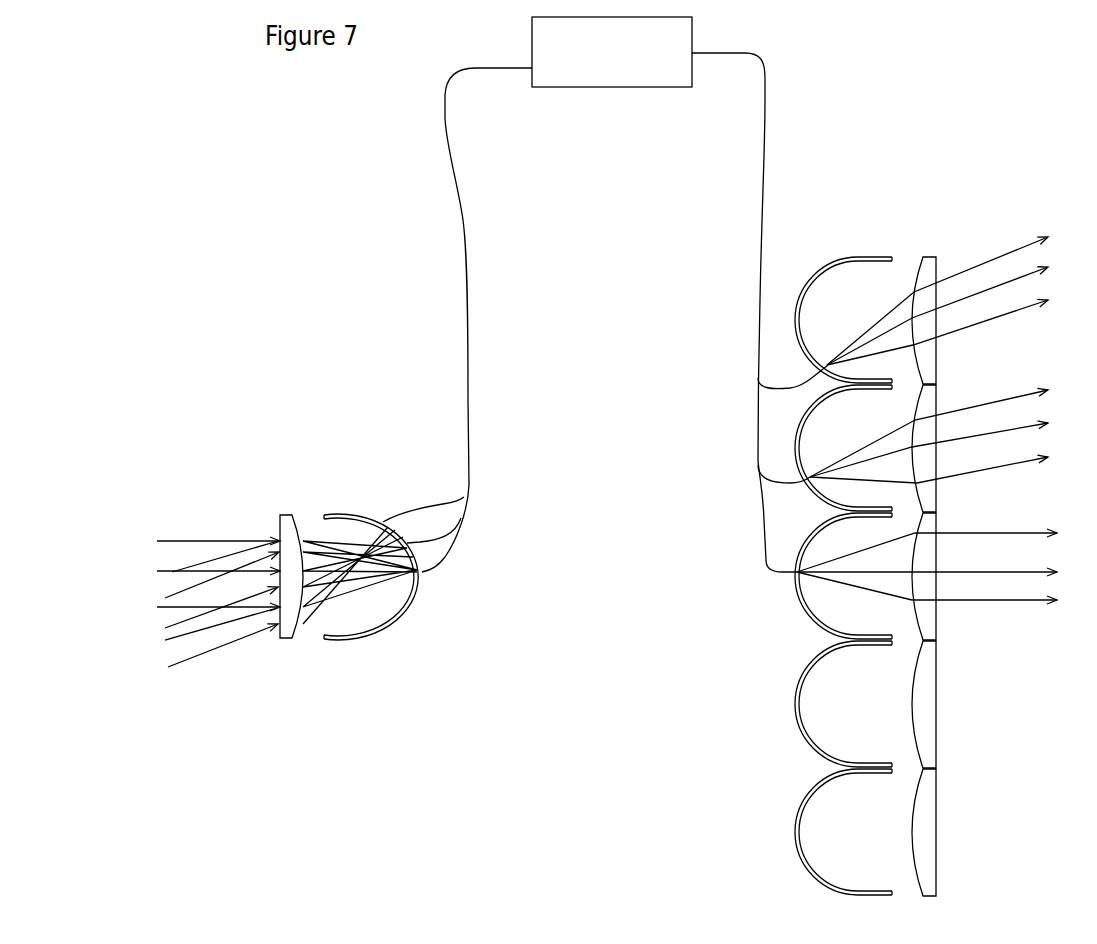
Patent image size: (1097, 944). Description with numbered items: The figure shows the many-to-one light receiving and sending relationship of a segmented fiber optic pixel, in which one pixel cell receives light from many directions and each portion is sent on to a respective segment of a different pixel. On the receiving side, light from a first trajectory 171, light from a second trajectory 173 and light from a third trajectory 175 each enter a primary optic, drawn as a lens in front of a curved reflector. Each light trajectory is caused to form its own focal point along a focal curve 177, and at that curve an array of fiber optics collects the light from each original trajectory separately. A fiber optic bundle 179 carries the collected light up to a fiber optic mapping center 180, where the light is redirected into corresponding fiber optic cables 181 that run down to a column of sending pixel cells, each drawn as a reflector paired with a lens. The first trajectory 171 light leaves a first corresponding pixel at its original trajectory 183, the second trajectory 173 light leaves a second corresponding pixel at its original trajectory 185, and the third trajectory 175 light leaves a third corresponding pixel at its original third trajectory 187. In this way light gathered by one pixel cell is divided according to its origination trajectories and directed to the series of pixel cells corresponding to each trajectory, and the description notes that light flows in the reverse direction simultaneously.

The light from a first trajectory 171 is at (188, 540).
The light from a second trajectory 173 is at (185, 636).
The light from a third trajectory 175 is at (238, 640).
The focal curve 177 is at (392, 628).
The fiber optic bundle 179 is at (468, 330).
The fiber optic mapping center 180 is at (602, 87).
The fiber optic cables 181 is at (758, 252).
The original trajectory of first light 183 is at (993, 603).
The original trajectory of second light 185 is at (1025, 462).
The original third trajectory 187 is at (990, 260).